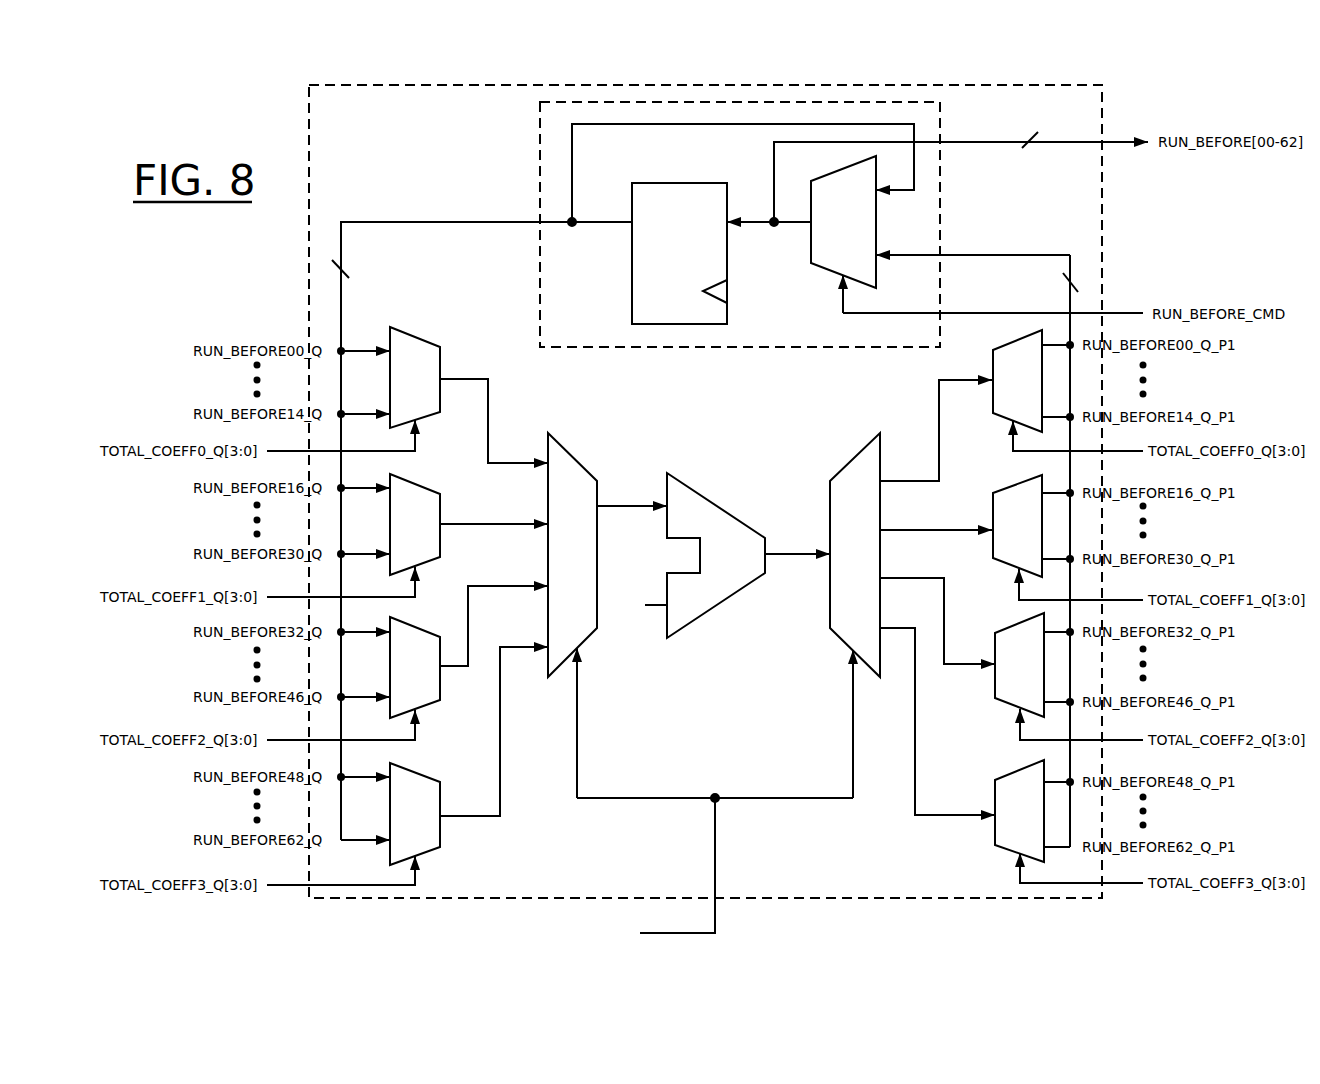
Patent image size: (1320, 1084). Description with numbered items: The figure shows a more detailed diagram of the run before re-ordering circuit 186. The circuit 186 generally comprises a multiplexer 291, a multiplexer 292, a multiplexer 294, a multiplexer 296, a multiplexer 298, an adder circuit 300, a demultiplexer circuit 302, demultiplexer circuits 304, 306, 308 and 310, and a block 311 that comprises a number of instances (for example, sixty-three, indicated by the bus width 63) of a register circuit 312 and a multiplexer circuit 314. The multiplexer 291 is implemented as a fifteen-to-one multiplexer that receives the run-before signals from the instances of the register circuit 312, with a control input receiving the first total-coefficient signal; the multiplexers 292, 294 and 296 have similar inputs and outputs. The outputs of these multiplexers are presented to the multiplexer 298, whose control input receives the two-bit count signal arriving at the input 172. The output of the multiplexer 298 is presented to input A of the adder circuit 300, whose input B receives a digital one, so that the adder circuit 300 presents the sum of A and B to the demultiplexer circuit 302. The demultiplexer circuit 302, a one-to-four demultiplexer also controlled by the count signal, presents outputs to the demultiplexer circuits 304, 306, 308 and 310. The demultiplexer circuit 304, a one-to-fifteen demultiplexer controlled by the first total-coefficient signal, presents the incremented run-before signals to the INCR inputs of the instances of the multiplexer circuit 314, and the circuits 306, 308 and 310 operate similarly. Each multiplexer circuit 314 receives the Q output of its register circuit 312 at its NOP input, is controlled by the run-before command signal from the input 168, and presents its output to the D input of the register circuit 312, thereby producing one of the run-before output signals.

The run before re-ordering circuit 186 is at (322, 68).
The number of instances 63 is at (705, 217).
The multiplexer 291 is at (420, 340).
The multiplexer 292 is at (420, 487).
The multiplexer 294 is at (430, 702).
The multiplexer 296 is at (420, 776).
The multiplexer 298 is at (570, 452).
The adder circuit 300 is at (704, 492).
The demultiplexer circuit 302 is at (858, 455).
The demultiplexer circuit 304 is at (1006, 344).
The demultiplexer circuit 306 is at (1008, 491).
The demultiplexer circuit 308 is at (1008, 630).
The demultiplexer circuit 310 is at (1008, 777).
The block 311 is at (626, 348).
The register circuit 312 is at (698, 182).
The multiplexer circuit 314 is at (822, 279).
The input 168 is at (1108, 312).
The input 172 is at (716, 900).